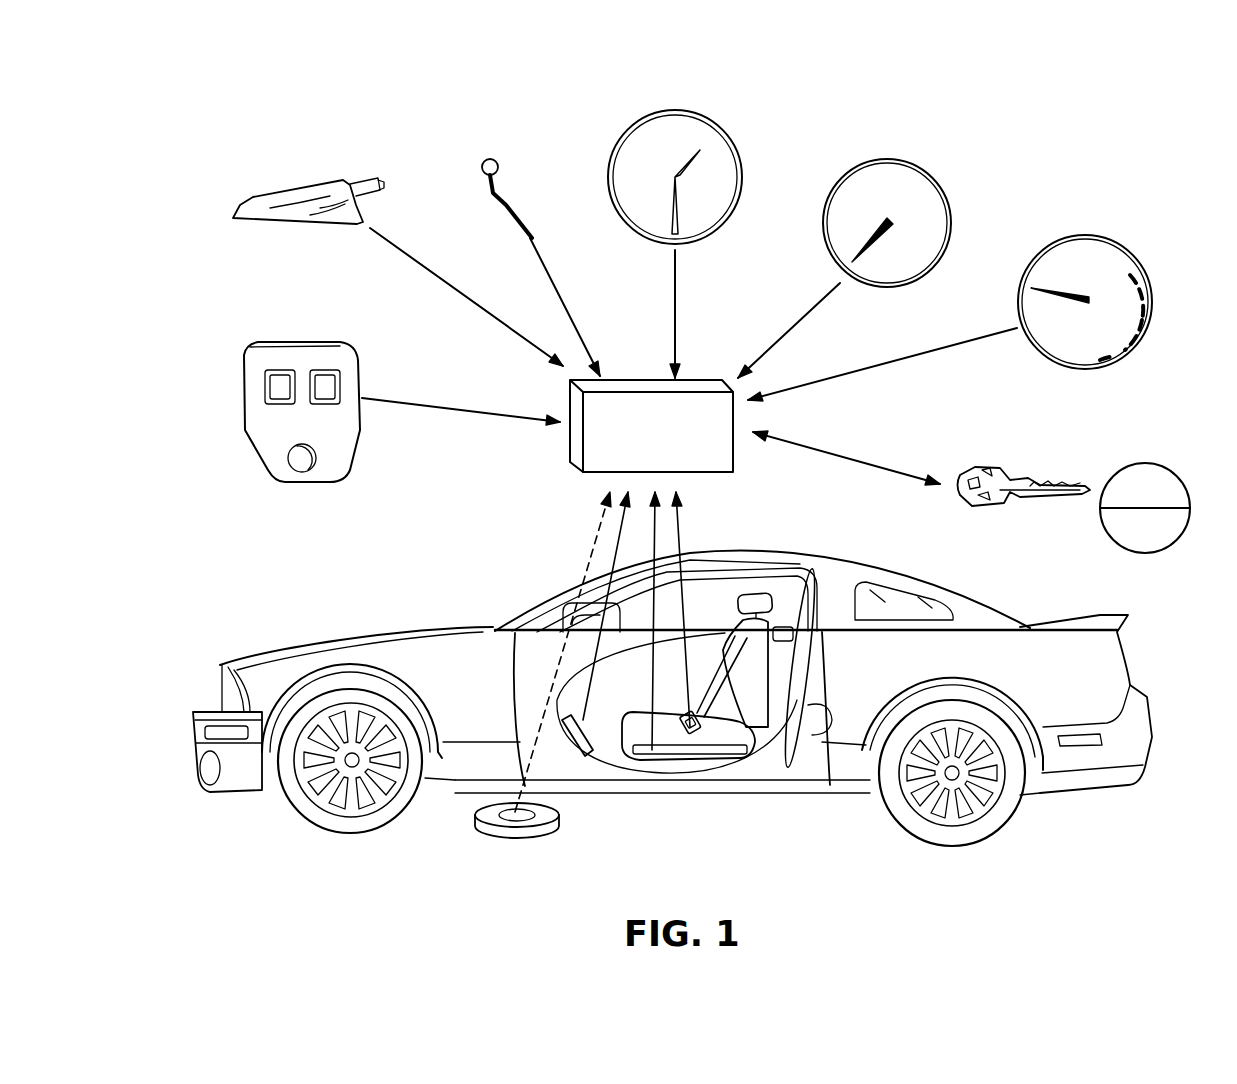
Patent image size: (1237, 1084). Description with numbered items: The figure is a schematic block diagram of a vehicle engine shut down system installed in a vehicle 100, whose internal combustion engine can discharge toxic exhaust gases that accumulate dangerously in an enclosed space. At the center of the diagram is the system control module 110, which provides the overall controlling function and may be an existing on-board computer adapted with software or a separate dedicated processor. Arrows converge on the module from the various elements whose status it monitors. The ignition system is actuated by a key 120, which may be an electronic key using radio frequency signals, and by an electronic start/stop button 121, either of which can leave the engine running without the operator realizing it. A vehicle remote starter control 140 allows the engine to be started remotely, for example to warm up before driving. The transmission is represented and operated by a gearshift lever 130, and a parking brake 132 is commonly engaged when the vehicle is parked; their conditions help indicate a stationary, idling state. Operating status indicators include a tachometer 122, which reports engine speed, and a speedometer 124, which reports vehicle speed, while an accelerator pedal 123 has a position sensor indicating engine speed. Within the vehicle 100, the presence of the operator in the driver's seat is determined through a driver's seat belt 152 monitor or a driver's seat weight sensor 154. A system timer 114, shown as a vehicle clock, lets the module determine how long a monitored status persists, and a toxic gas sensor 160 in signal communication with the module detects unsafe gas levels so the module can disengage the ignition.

The vehicle 100 is at (508, 582).
The system control module 110 is at (650, 385).
The system timer 114 is at (622, 148).
The key 120 is at (1058, 487).
The electronic start/stop button 121 is at (1108, 475).
The tachometer 122 is at (1145, 270).
The accelerator pedal 123 is at (593, 745).
The speedometer 124 is at (948, 196).
The gearshift lever 130 is at (517, 210).
The parking brake 132 is at (296, 186).
The vehicle remote starter control 140 is at (248, 345).
The driver's seat belt 152 is at (760, 735).
The driver's seat weight sensor 154 is at (700, 760).
The toxic gas sensor 160 is at (480, 828).